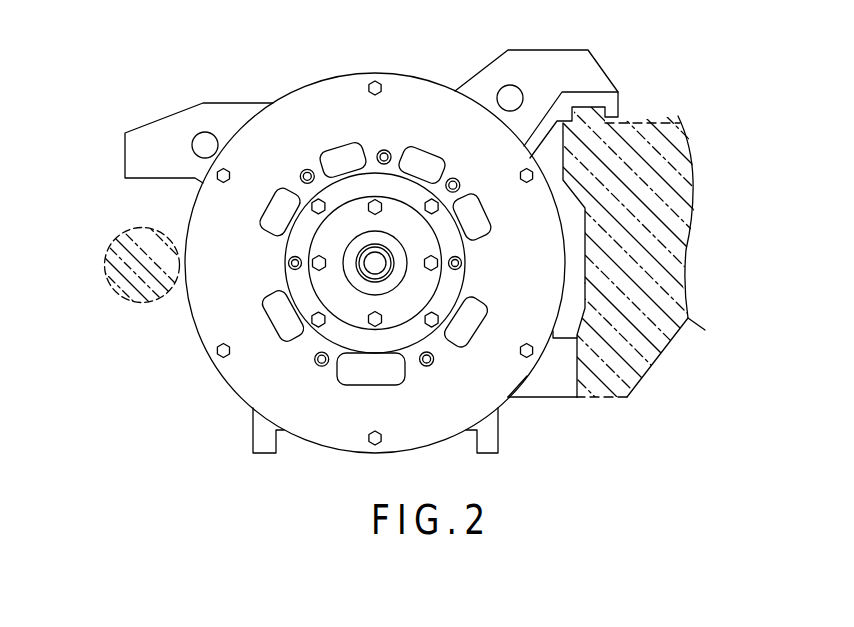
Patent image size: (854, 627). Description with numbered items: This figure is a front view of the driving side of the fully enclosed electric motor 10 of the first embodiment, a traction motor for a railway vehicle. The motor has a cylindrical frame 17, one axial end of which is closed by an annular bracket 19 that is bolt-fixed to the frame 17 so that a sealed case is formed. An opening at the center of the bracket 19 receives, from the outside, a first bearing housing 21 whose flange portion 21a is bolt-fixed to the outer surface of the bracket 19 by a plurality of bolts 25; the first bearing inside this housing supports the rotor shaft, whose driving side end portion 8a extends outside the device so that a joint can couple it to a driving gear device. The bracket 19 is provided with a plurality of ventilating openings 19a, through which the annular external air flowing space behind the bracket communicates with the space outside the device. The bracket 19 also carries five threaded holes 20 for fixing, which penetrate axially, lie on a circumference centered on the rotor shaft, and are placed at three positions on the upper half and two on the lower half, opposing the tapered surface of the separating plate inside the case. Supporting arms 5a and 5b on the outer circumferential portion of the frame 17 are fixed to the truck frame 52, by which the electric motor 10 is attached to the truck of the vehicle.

The electric motor 10 is at (200, 96).
The frame 17 is at (436, 96).
The bracket 19 is at (523, 400).
The ventilating openings 19a is at (347, 160).
The threaded holes for fixing 20 is at (303, 169).
The first bearing housing 21 is at (289, 277).
The flange portion 21a is at (462, 257).
The bolts 25 is at (313, 202).
The driving side end portion 8a is at (345, 251).
The supporting arm 5a is at (556, 63).
The supporting arm 5b is at (572, 392).
The truck frame 52 is at (668, 128).